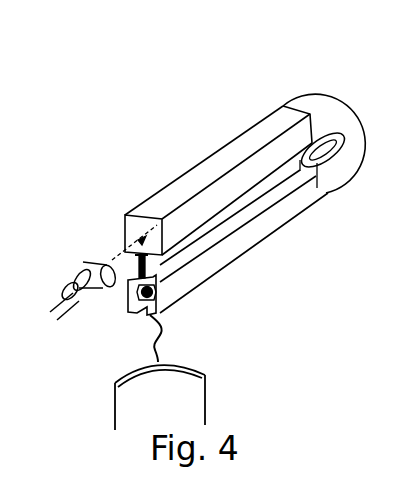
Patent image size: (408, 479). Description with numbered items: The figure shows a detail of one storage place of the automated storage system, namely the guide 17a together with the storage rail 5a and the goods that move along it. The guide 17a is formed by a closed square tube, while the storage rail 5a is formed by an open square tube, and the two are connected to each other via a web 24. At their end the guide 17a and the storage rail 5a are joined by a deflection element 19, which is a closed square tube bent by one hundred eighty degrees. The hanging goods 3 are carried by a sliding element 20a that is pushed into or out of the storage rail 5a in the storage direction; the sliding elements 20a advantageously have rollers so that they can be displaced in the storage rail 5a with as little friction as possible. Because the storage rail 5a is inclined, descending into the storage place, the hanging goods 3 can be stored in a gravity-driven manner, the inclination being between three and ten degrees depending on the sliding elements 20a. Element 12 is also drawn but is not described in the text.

The hanging goods 3 is at (172, 403).
The storage rail 5a is at (237, 238).
The bolt 12 is at (86, 280).
The guide 17a is at (203, 177).
The deflection element 19 is at (330, 123).
The sliding element 20a is at (157, 292).
The web 24 is at (143, 262).